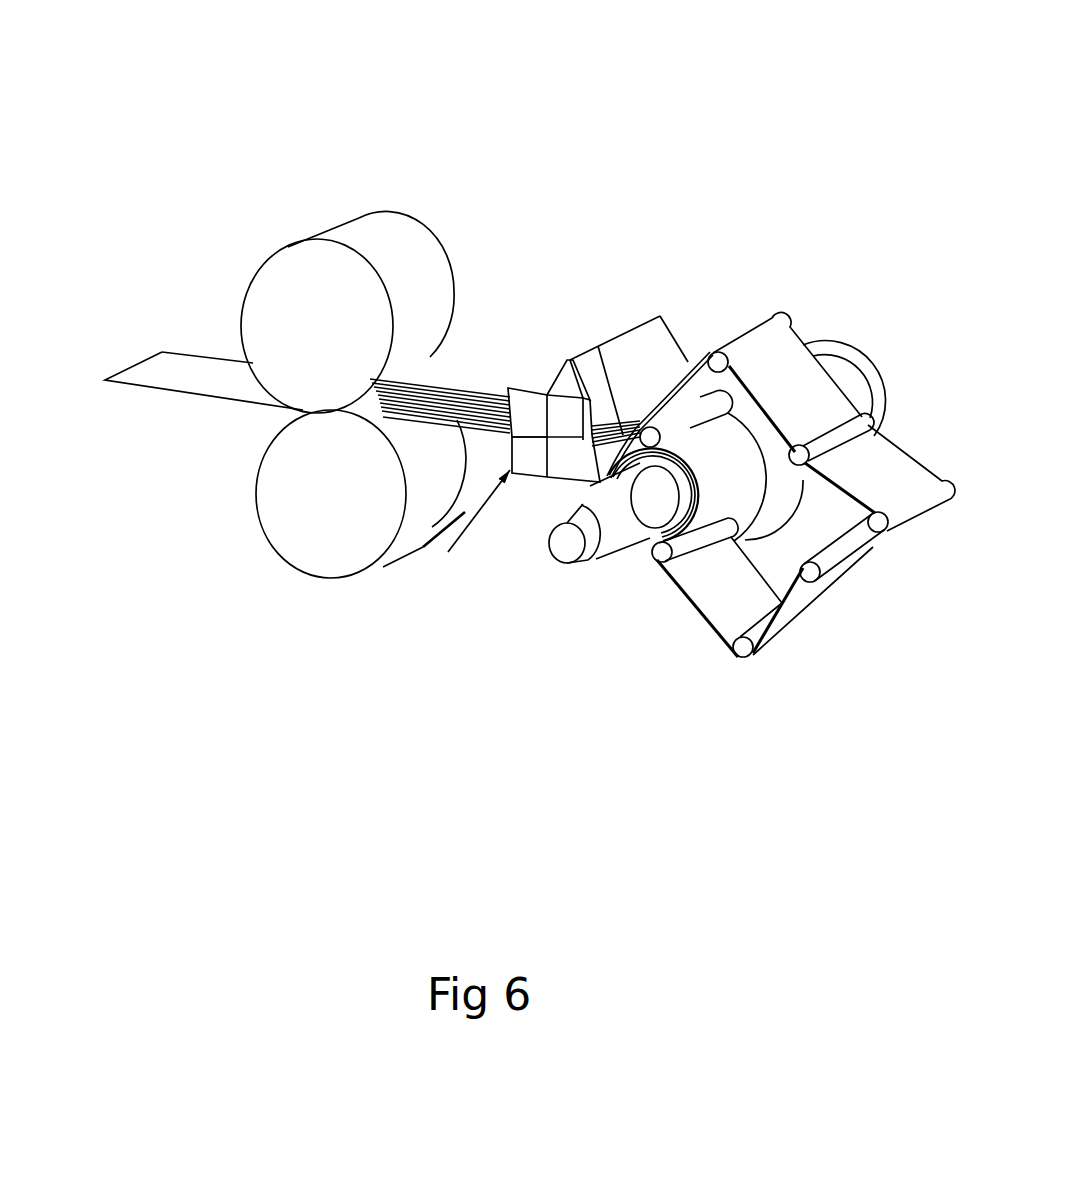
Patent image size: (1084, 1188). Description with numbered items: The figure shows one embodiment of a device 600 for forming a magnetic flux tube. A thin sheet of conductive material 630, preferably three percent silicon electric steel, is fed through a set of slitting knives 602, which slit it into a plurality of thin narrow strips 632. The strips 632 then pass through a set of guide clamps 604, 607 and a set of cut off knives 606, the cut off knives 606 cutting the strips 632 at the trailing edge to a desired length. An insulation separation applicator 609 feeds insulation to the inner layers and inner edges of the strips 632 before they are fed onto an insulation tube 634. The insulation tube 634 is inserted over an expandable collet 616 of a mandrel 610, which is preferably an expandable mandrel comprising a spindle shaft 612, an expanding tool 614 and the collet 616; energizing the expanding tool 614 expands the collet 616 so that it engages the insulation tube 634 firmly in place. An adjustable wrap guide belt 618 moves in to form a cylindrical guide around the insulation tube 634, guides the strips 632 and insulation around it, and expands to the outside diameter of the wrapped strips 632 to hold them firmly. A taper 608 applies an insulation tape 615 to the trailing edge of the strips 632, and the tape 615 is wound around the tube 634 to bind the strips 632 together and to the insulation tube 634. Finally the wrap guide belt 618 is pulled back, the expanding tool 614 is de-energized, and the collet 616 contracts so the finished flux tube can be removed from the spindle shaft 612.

The device 600 is at (480, 899).
The slitting knives 602 is at (315, 328).
The guide clamp 604 is at (443, 291).
The cut off knives 606 is at (482, 263).
The guide clamp 607 is at (486, 253).
The taper 608 is at (667, 279).
The insulation separation applicator 609 is at (427, 552).
The mandrel 610 is at (763, 529).
The spindle shaft 612 is at (518, 668).
The expanding tool 614 is at (635, 635).
The insulation tape 615 is at (590, 266).
The expandable collet 616 is at (704, 363).
The adjustable wrap guide belt 618 is at (829, 611).
The thin sheet of conductive material 630 is at (285, 403).
The thin narrow strips 632 is at (337, 528).
The insulation tube 634 is at (781, 451).